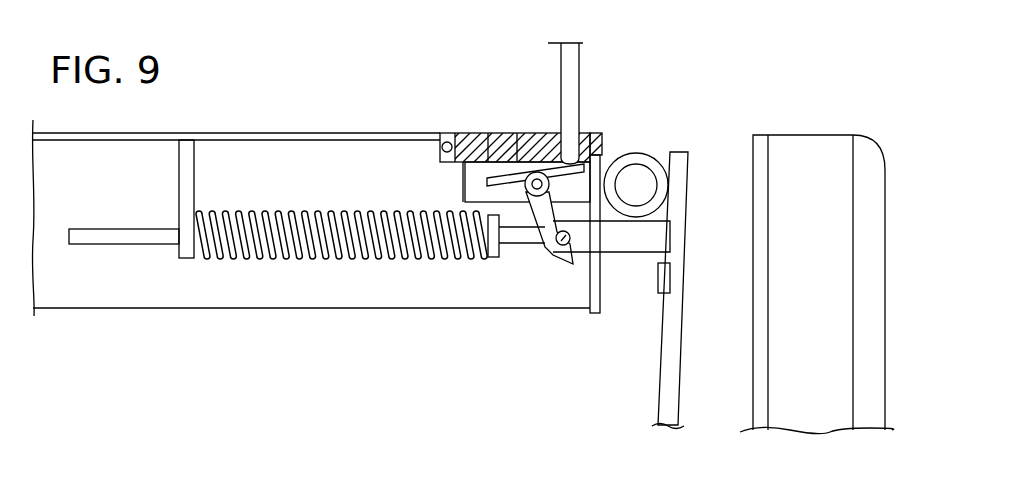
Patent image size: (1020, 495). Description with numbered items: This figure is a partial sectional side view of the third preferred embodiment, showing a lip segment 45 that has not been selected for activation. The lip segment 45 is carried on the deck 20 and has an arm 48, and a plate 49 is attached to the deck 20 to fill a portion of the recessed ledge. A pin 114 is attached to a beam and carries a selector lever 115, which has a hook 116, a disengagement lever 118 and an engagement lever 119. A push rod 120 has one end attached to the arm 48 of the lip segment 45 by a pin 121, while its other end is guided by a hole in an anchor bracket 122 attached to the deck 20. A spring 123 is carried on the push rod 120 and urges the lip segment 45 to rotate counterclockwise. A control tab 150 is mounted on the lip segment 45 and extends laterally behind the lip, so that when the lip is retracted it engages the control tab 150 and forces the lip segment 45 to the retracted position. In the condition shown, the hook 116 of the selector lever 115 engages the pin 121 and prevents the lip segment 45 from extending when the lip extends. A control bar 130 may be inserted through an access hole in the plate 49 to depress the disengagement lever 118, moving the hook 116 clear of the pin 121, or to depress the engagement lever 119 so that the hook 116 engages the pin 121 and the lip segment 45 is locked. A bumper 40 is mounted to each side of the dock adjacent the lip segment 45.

The deck 20 is at (262, 133).
The bumper 40 is at (828, 150).
The lip segment 45 is at (668, 370).
The arm 48 is at (630, 247).
The plate 49 is at (480, 133).
The pin 114 is at (510, 177).
The selector lever 115 is at (487, 280).
The hook 116 is at (546, 258).
The disengagement lever 118 is at (555, 170).
The engagement lever 119 is at (483, 133).
The push rod 120 is at (88, 245).
The pin 121 is at (563, 246).
The anchor bracket 122 is at (195, 152).
The spring 123 is at (283, 260).
The control bar 130 is at (577, 95).
The control tab 150 is at (666, 278).